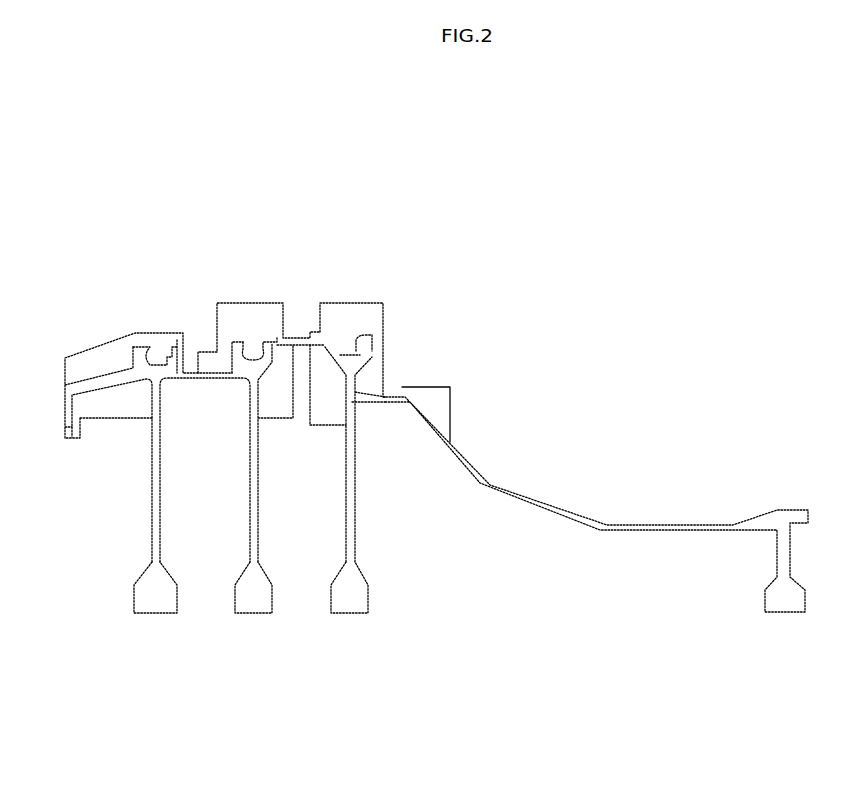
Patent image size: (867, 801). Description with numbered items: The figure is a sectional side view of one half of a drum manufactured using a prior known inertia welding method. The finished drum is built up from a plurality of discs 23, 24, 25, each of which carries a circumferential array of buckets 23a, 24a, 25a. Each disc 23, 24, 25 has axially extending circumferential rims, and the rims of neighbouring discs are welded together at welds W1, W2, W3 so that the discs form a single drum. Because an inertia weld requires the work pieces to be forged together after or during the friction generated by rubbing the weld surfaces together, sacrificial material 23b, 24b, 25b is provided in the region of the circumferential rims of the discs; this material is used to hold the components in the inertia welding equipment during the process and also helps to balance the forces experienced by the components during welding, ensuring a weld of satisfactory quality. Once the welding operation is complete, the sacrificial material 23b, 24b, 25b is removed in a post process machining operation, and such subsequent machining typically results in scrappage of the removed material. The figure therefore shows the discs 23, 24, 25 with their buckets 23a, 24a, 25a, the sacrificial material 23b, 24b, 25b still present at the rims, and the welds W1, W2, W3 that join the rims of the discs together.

The disc 23 is at (160, 604).
The buckets 23a is at (154, 363).
The sacrificial material 23b is at (98, 370).
The disc 24 is at (255, 604).
The buckets 24a is at (253, 350).
The sacrificial material 24b is at (227, 312).
The disc 25 is at (352, 604).
The buckets 25a is at (355, 348).
The sacrificial material 25b is at (363, 312).
The weld W1 is at (191, 377).
The weld W2 is at (258, 342).
The weld W3 is at (385, 400).